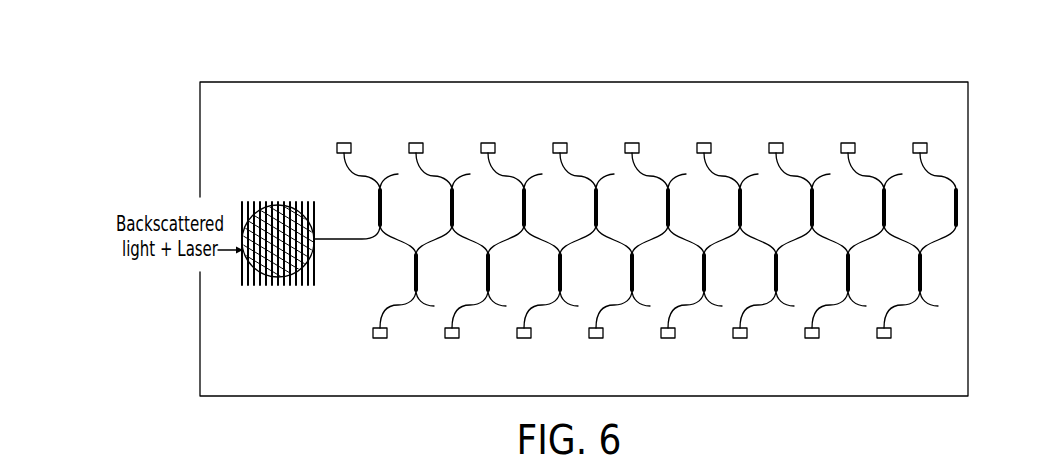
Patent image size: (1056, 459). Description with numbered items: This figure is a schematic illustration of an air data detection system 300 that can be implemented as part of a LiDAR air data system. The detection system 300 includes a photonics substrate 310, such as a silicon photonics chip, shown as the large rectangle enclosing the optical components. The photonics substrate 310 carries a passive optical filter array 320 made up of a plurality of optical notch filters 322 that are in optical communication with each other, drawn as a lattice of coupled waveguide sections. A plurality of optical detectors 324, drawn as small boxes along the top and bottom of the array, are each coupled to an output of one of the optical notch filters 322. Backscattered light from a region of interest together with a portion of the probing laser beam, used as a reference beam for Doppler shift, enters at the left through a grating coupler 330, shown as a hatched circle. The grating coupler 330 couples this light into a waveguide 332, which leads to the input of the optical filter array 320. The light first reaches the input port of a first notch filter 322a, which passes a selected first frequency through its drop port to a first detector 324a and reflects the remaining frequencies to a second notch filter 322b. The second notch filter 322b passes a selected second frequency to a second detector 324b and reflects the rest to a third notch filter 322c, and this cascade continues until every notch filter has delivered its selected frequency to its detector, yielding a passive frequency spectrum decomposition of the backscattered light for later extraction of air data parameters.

The air data detection system 300 is at (752, 73).
The photonics substrate 310 is at (878, 118).
The passive optical filter array 320 is at (938, 260).
The optical notch filter 322 is at (575, 175).
The first notch filter 322a is at (376, 205).
The second notch filter 322b is at (413, 277).
The third notch filter 322c is at (450, 208).
The optical detector 324 is at (558, 142).
The first detector 324a is at (344, 142).
The second detector 324b is at (380, 339).
The grating coupler 330 is at (255, 277).
The waveguide 332 is at (347, 242).